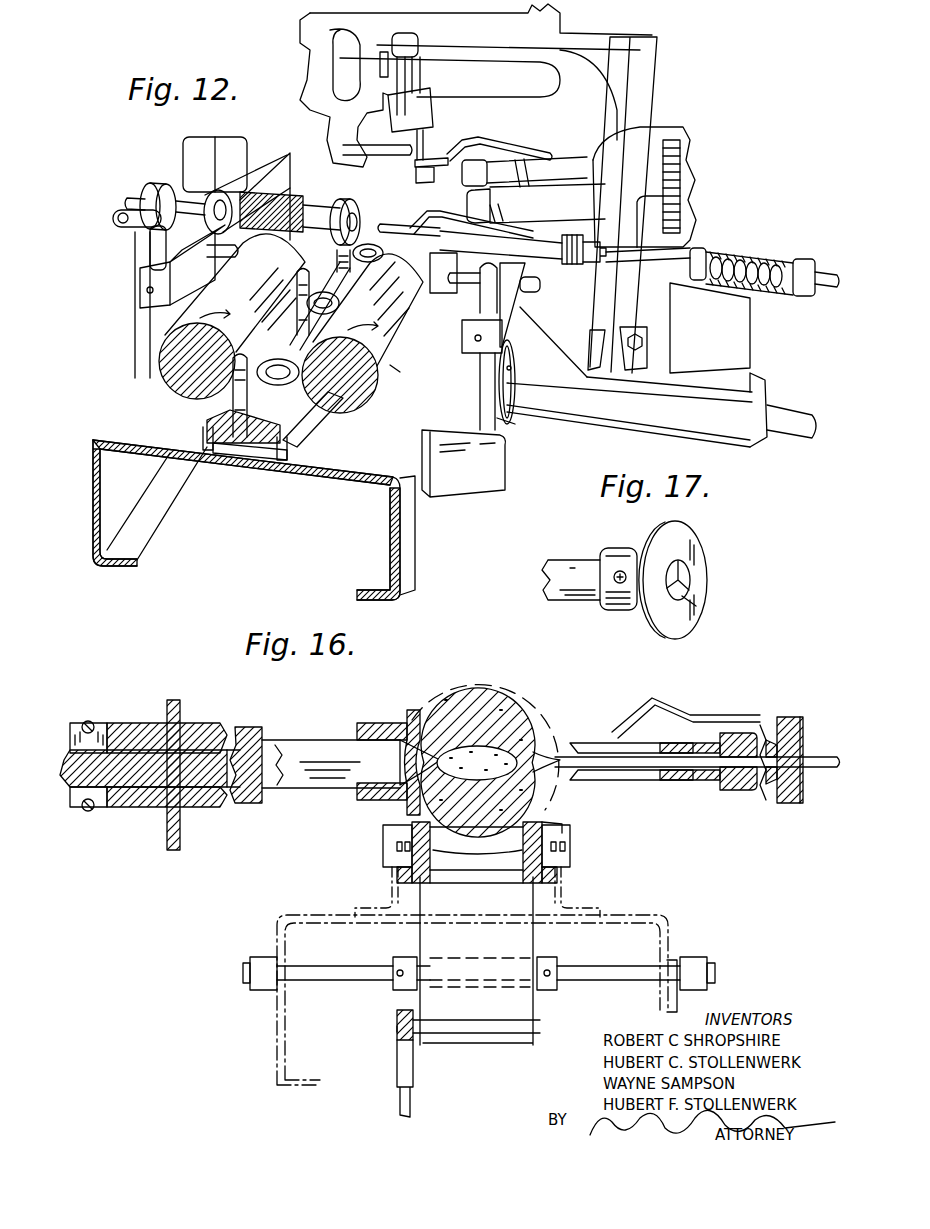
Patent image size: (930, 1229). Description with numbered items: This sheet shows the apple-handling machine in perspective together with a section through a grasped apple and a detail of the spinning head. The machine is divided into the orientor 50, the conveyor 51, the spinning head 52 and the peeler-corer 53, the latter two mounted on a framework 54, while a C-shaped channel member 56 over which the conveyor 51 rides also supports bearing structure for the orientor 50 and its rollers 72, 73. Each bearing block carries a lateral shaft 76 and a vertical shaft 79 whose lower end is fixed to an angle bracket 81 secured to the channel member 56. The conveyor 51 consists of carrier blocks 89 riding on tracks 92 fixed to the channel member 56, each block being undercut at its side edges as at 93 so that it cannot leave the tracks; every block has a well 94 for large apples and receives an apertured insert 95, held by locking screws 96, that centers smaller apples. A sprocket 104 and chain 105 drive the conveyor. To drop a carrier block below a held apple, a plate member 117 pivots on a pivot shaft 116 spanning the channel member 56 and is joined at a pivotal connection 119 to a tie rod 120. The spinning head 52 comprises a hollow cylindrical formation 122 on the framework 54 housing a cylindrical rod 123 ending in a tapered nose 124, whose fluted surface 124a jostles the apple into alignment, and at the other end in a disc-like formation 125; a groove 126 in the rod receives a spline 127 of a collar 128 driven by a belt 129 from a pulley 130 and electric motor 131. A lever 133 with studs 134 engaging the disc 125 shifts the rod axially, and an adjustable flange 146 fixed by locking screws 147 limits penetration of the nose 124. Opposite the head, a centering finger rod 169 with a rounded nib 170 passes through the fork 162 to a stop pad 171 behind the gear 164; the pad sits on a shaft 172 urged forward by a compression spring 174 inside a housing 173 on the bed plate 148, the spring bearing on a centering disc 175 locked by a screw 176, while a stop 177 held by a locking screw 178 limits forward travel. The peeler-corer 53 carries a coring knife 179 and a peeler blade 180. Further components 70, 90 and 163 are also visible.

In FIG. 12, the orientor 50 is at (384, 370).
In FIG. 12, the conveyor 51 is at (248, 460).
In FIG. 16, the spinning head 52 is at (300, 740).
In FIG. 12, the peeler-corer 53 is at (660, 76).
In FIG. 16, the peeler-corer 53 is at (762, 733).
In FIG. 12, the framework 54 is at (290, 175).
In FIG. 16, the framework 54 is at (167, 832).
In FIG. 12, the C-shaped channel member 56 is at (123, 564).
In FIG. 16, the C-shaped channel member 56 is at (645, 912).
In FIG. 12, the bed rod 70 is at (792, 412).
In FIG. 12, the second roller 72 is at (365, 398).
In FIG. 12, the first roller 73 is at (170, 362).
In FIG. 12, the shaft 76 is at (530, 292).
In FIG. 12, the shaft 79 is at (480, 295).
In FIG. 12, the angle bracket 81 is at (505, 457).
In FIG. 12, the carrier blocks 89 is at (207, 427).
In FIG. 16, the carrier blocks 89 is at (570, 828).
In FIG. 12, the pin 90 is at (247, 403).
In FIG. 12, the tracks 92 is at (313, 439).
In FIG. 16, the tracks 92 is at (560, 893).
In FIG. 12, the undercut side edges 93 is at (203, 434).
In FIG. 16, the undercut side edges 93 is at (388, 870).
In FIG. 16, the well 94 is at (474, 870).
In FIG. 16, the apertured insert 95 is at (563, 823).
In FIG. 16, the locking screws 96 is at (390, 846).
In FIG. 12, the sprocket 104 is at (515, 357).
In FIG. 12, the chain 105 is at (513, 418).
In FIG. 16, the pivot shaft 116 is at (317, 977).
In FIG. 16, the elongated plate member 117 is at (428, 939).
In FIG. 16, the pivotal connection 119 is at (394, 1030).
In FIG. 16, the tie rod 120 is at (400, 1106).
In FIG. 12, the hollow cylindrical formation 122 is at (296, 205).
In FIG. 16, the hollow cylindrical formation 122 is at (196, 745).
In FIG. 12, the cylindrical rod 123 is at (322, 214).
In FIG. 17, the cylindrical rod 123 is at (570, 601).
In FIG. 16, the cylindrical rod 123 is at (300, 789).
In FIG. 12, the tapered nose 124 is at (358, 223).
In FIG. 17, the tapered nose 124 is at (688, 580).
In FIG. 16, the tapered nose 124 is at (418, 758).
In FIG. 17, the flutes 124a is at (696, 606).
In FIG. 12, the disc-like formation 125 is at (150, 190).
In FIG. 16, the longitudinal groove 126 is at (143, 738).
In FIG. 16, the key or spline 127 is at (75, 745).
In FIG. 16, the collar 128 is at (86, 811).
In FIG. 16, the belt 129 is at (92, 724).
In FIG. 12, the pulley 130 is at (268, 160).
In FIG. 12, the electric motor 131 is at (197, 148).
In FIG. 12, the lever 133 is at (136, 322).
In FIG. 12, the studs 134 is at (122, 225).
In FIG. 12, the adjustable flange 146 is at (360, 212).
In FIG. 17, the adjustable flange 146 is at (696, 541).
In FIG. 16, the adjustable flange 146 is at (412, 712).
In FIG. 17, the locking screws 147 is at (619, 570).
In FIG. 16, the locking screws 147 is at (374, 735).
In FIG. 12, the bed plate 148 is at (664, 378).
In FIG. 16, the fork 162 is at (706, 782).
In FIG. 12, the shaft 163 is at (548, 248).
In FIG. 16, the shaft 163 is at (742, 790).
In FIG. 12, the gear 164 is at (573, 265).
In FIG. 16, the gear 164 is at (797, 804).
In FIG. 16, the centering finger rod 169 is at (822, 768).
In FIG. 16, the enlarged rounded nib 170 is at (548, 742).
In FIG. 12, the stop pad 171 is at (593, 263).
In FIG. 12, the shaft 172 is at (650, 260).
In FIG. 12, the housing 173 is at (738, 258).
In FIG. 12, the compression spring 174 is at (776, 258).
In FIG. 12, the shaft centering disc 175 is at (700, 250).
In FIG. 12, the locking screw 176 is at (697, 285).
In FIG. 12, the stop 177 is at (806, 264).
In FIG. 12, the locking screw 178 is at (804, 298).
In FIG. 12, the coring knife 179 is at (403, 158).
In FIG. 12, the peeler blade 180 is at (424, 182).